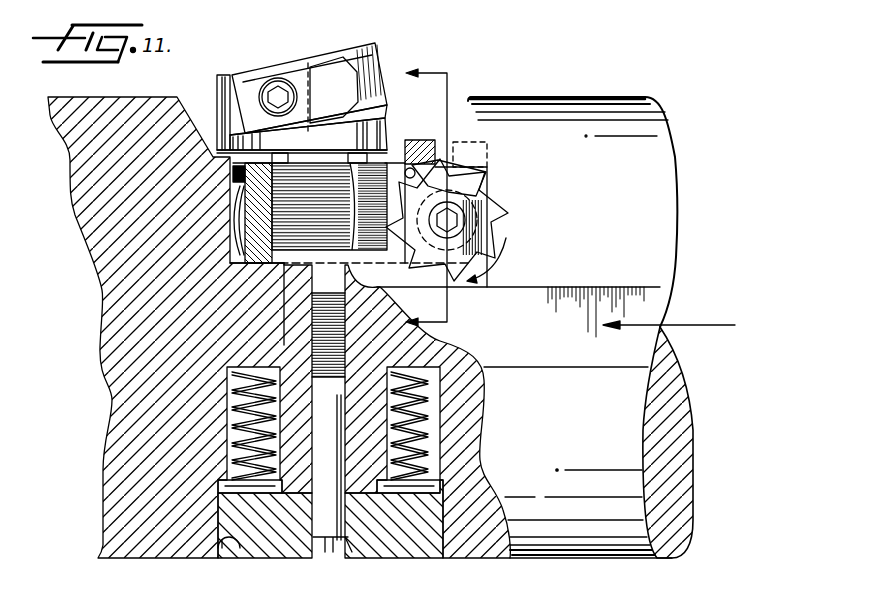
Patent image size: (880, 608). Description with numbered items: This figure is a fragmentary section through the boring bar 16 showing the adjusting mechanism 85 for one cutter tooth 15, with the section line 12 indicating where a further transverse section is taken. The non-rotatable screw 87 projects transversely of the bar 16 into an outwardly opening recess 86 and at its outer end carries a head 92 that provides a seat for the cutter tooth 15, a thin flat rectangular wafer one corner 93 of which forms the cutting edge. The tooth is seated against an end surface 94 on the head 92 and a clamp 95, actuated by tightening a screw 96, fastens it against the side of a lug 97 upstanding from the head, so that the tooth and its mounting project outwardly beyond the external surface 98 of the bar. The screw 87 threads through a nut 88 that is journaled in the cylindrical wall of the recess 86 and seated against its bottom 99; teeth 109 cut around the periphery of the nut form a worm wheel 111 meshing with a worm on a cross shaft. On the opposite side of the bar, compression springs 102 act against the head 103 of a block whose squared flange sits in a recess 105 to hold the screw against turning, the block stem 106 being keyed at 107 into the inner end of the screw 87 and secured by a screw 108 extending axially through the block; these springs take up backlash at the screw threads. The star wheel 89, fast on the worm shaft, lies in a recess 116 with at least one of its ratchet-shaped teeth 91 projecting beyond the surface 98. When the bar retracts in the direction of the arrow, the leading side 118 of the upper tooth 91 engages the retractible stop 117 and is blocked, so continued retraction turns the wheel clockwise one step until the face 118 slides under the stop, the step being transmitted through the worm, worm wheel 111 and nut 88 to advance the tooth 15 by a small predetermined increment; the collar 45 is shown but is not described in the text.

The section line 12 is at (570, 201).
The cutter tooth 15 is at (350, 56).
The boring bar 16 is at (662, 224).
The collar 45 is at (595, 367).
The adjusting mechanism 85 is at (427, 53).
The recess 86 is at (243, 240).
The screw 87 is at (322, 211).
The nut 88 is at (235, 276).
The star wheel 89 is at (482, 208).
The teeth 91 is at (458, 182).
The head 92 is at (385, 125).
The cutting edge 93 is at (372, 44).
The end surface 94 is at (384, 106).
The clamp 95 is at (247, 78).
The screw 96 is at (280, 92).
The lug 97 is at (218, 97).
The external surface 98 is at (570, 97).
The bottom 99 is at (283, 283).
The compression springs 102 is at (238, 440).
The head 103 is at (275, 568).
The recess 105 is at (238, 558).
The stem 106 is at (292, 403).
The key 107 is at (300, 347).
The screw 108 is at (330, 555).
The teeth 109 is at (236, 220).
The worm wheel 111 is at (234, 176).
The recess 116 is at (512, 290).
The stop 117 is at (436, 145).
The leading side 118 is at (466, 202).